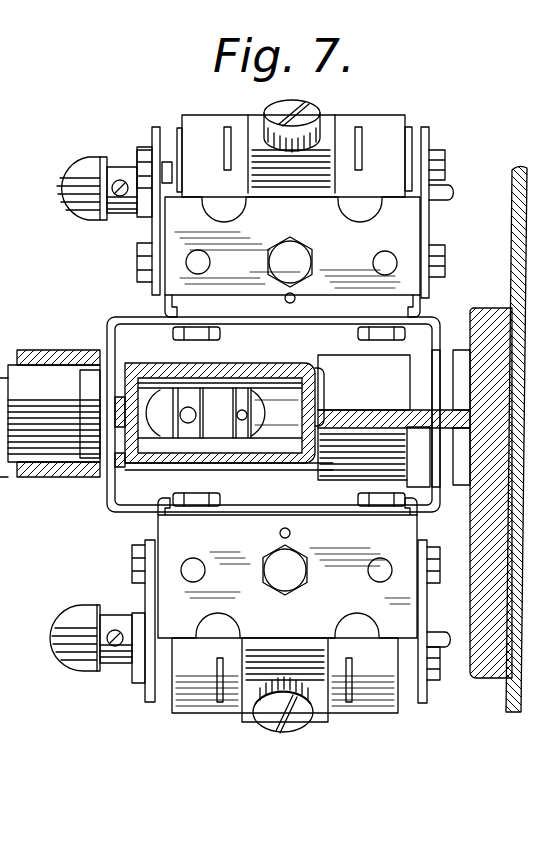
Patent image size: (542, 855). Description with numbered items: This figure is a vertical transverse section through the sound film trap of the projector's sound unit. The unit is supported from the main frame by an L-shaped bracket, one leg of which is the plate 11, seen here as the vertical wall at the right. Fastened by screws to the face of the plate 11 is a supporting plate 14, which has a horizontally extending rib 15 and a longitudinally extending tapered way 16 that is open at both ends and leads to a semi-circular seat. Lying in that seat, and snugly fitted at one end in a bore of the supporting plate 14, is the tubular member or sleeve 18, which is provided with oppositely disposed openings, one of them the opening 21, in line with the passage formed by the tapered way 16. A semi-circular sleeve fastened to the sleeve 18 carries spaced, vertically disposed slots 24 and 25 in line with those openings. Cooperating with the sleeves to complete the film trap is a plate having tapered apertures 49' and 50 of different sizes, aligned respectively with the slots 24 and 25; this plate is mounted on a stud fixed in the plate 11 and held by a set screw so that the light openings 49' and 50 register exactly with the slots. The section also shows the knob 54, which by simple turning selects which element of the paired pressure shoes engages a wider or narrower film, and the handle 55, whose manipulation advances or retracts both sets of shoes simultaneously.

The plate 11 is at (513, 277).
The supporting plate 14 is at (482, 520).
The horizontally extending rib 15 is at (378, 412).
The tapered way 16 is at (283, 447).
The tubular member or sleeve 18 is at (295, 410).
The opening 21 is at (268, 423).
The slot 24 is at (270, 380).
The slot 25 is at (177, 410).
The tapered aperture 49' is at (256, 386).
The tapered aperture 50 is at (191, 412).
The knob 54 is at (86, 165).
The handle 55 is at (8, 478).